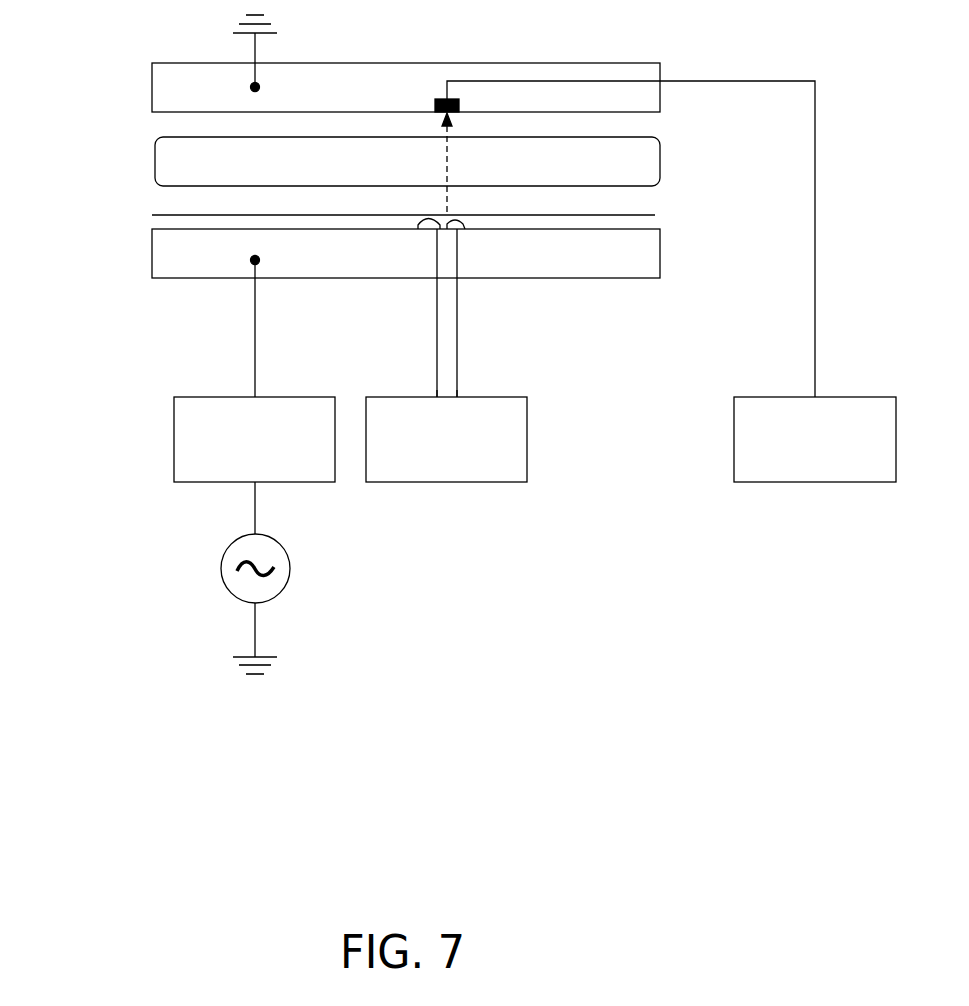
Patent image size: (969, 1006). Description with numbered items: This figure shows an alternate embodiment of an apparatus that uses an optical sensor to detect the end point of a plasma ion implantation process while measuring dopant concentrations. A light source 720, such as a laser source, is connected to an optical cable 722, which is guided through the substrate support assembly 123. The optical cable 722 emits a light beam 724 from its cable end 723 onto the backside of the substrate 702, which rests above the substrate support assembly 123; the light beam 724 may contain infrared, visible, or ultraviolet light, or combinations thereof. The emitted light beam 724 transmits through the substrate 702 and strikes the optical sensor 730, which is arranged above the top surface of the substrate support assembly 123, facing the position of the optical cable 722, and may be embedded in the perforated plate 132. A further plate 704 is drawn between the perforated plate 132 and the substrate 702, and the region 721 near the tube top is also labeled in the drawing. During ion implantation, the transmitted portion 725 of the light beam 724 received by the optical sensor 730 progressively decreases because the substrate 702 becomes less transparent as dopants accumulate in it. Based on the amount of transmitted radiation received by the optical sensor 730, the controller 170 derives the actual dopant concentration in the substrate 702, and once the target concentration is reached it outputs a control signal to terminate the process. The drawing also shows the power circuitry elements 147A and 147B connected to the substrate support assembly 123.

The perforated plate 132 is at (230, 101).
The intermediate plate / window 704 is at (230, 175).
The substrate 702 is at (655, 215).
The substrate support assembly 123 is at (230, 266).
The optical sensor 730 is at (435, 105).
The transmitted portion 725 is at (447, 158).
The optical cable 722 is at (457, 313).
The tube first end portion 721 is at (418, 226).
The light beam 724 is at (465, 229).
The cable end 723 is at (457, 395).
The light source 720 is at (445, 482).
The matching network 147B is at (174, 435).
The RF power source 147A is at (221, 567).
The controller 170 is at (734, 430).